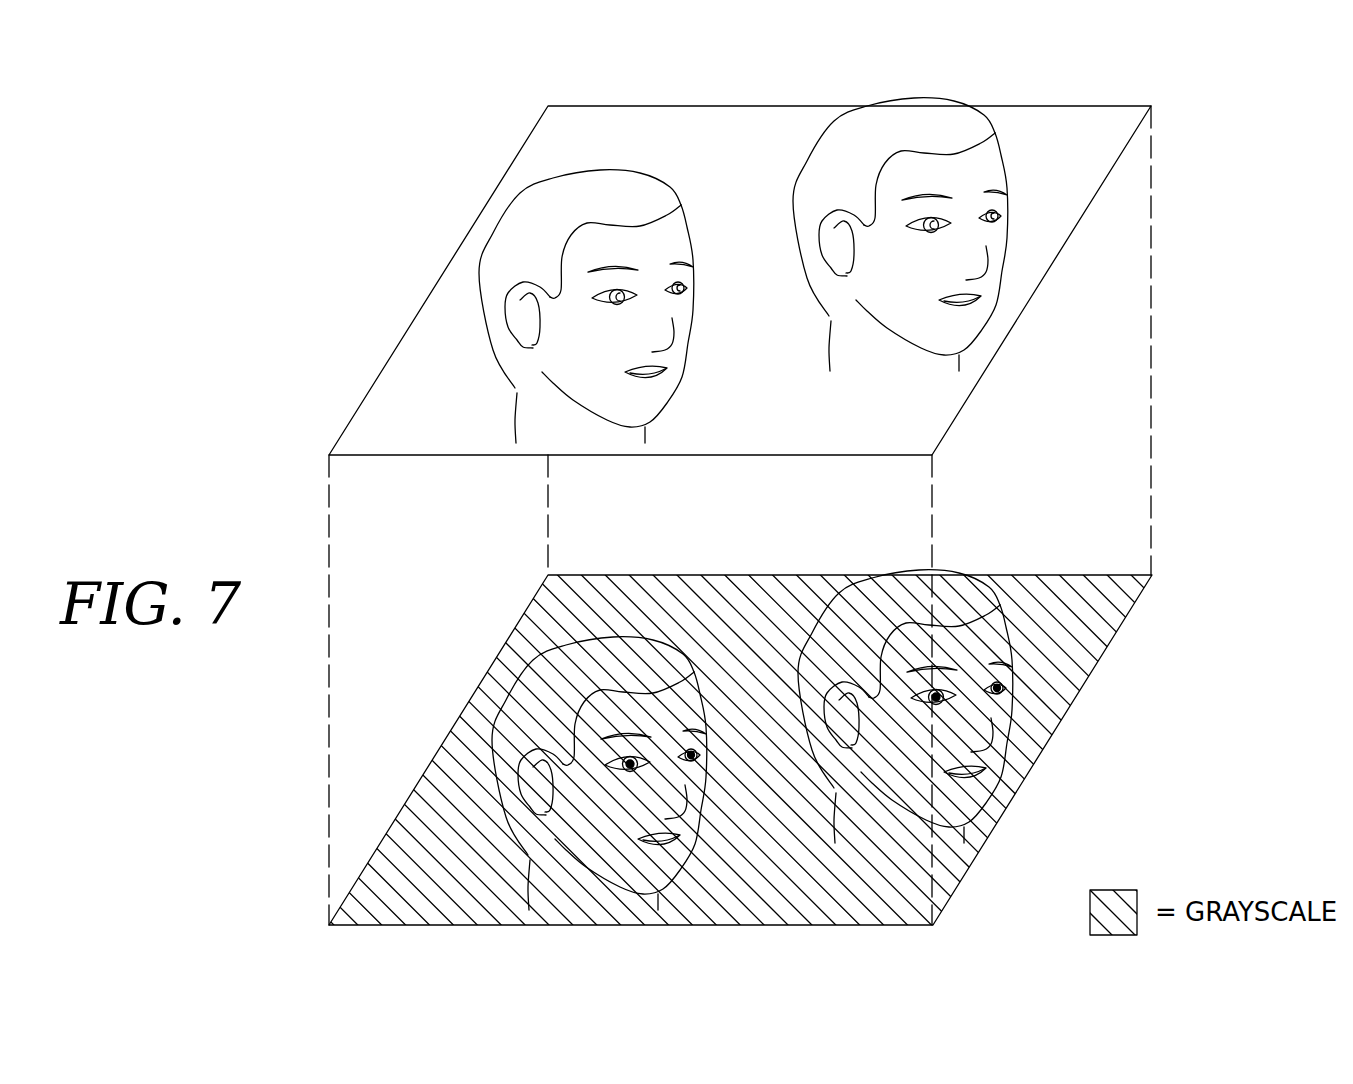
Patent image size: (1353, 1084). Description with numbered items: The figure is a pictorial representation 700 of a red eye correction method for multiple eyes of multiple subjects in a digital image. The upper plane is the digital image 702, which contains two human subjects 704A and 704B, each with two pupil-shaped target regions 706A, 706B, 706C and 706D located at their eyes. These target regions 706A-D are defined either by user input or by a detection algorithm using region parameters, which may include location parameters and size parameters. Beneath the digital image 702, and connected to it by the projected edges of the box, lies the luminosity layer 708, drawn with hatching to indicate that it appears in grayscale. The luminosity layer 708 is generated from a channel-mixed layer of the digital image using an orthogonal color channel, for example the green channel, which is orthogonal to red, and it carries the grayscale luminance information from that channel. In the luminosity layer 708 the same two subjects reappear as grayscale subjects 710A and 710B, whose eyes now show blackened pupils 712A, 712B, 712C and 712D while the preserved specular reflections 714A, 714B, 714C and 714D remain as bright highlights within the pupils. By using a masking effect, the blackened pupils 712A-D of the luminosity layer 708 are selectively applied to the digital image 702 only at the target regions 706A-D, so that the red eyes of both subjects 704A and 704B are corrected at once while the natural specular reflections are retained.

The pictorial representation 700 is at (196, 301).
The digital image 702 is at (746, 104).
The human subject 704A is at (515, 188).
The human subject 704B is at (824, 118).
The pupil-shaped target region 706A is at (640, 298).
The pupil-shaped target region 706B is at (688, 290).
The pupil-shaped target region 706C is at (942, 218).
The pupil-shaped target region 706D is at (1003, 214).
The luminosity layer 708 is at (1130, 614).
The subject 710A is at (520, 632).
The subject 710B is at (830, 581).
The blackened pupil 712A is at (527, 838).
The blackened pupil 712B is at (703, 762).
The blackened pupil 712C is at (840, 664).
The blackened pupil 712D is at (1008, 663).
The preserved specular reflection 714A is at (630, 776).
The preserved specular reflection 714B is at (699, 752).
The preserved specular reflection 714C is at (994, 788).
The preserved specular reflection 714D is at (1006, 693).